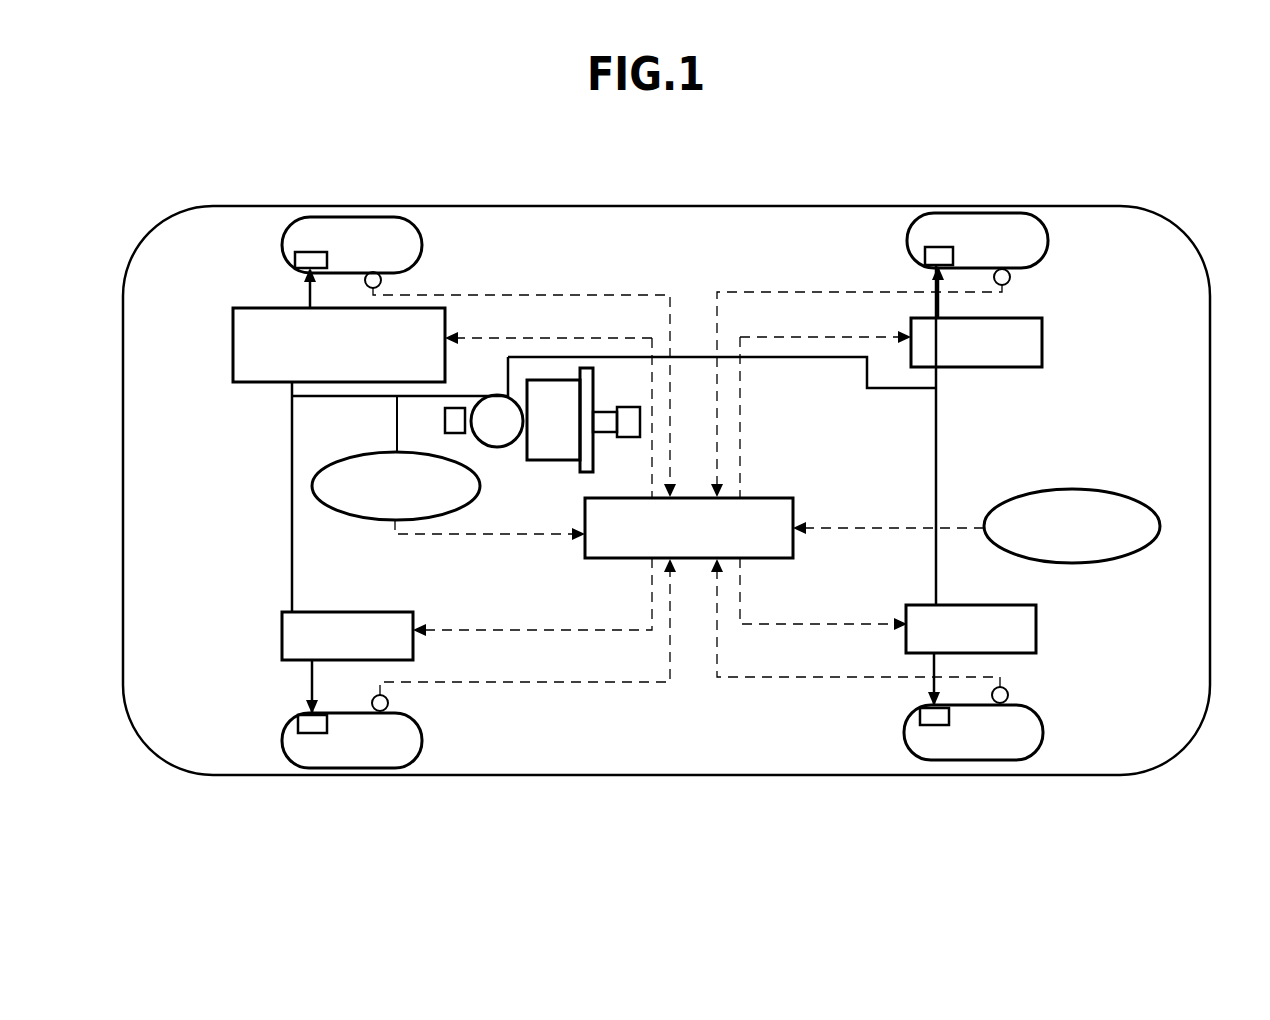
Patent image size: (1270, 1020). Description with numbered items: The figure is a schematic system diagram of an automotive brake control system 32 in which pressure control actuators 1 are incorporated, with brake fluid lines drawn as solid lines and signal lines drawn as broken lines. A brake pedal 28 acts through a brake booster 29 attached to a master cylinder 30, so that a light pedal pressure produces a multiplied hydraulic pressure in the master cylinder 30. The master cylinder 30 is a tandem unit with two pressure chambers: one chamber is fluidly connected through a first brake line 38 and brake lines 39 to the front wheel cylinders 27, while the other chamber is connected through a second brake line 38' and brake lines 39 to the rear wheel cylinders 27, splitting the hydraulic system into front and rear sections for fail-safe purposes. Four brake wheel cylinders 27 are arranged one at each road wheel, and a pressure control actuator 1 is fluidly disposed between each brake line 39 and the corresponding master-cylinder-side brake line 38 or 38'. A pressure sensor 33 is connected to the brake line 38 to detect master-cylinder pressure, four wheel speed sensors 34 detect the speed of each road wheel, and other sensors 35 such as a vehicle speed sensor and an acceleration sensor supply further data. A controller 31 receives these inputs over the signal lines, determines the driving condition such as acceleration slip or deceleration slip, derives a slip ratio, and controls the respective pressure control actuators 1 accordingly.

The pressure control actuator 1 is at (233, 340).
The brake wheel cylinder 27 is at (306, 252).
The brake pedal 28 is at (628, 408).
The brake booster 29 is at (556, 390).
The master cylinder 30 is at (460, 437).
The controller 31 is at (585, 545).
The automotive brake control system 32 is at (772, 240).
The pressure sensor 33 is at (363, 521).
The wheel speed sensor 34 is at (381, 281).
The other sensors 35 is at (1085, 488).
The first brake line 38 is at (361, 484).
The second brake line 38' is at (722, 435).
The brake line 39 is at (306, 300).